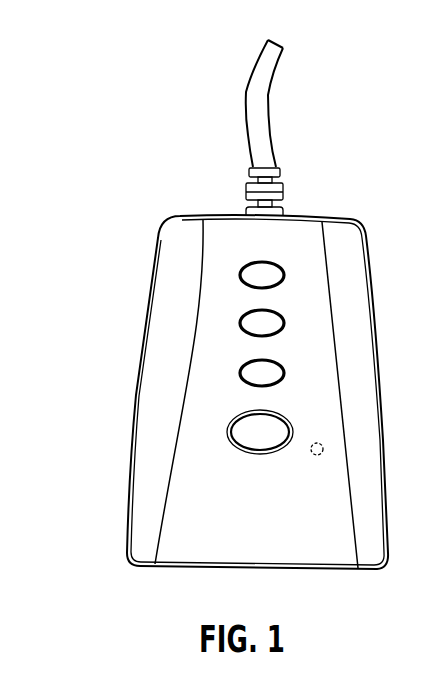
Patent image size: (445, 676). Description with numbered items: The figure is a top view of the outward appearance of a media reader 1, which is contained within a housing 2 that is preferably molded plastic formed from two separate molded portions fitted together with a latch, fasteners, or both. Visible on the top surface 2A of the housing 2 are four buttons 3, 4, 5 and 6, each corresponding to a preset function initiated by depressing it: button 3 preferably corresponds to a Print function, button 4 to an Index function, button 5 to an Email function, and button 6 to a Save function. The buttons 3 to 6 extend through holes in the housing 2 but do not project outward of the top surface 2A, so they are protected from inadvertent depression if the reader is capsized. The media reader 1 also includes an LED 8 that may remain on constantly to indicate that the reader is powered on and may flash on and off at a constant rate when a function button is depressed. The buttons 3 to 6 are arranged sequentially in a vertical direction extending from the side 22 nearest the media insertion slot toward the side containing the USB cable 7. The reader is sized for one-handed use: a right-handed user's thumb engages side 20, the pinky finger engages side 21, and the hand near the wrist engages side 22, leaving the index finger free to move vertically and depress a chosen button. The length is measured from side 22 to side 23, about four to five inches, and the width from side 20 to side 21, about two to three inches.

The media reader 1 is at (122, 211).
The housing 2 is at (378, 305).
The top surface 2A is at (347, 559).
The button 3 is at (227, 432).
The button 4 is at (240, 370).
The button 5 is at (240, 320).
The button 6 is at (240, 272).
The USB cable 7 is at (269, 110).
The LED 8 is at (323, 448).
The side 20 is at (133, 400).
The side 21 is at (387, 411).
The side 22 is at (232, 573).
The side 23 is at (302, 216).